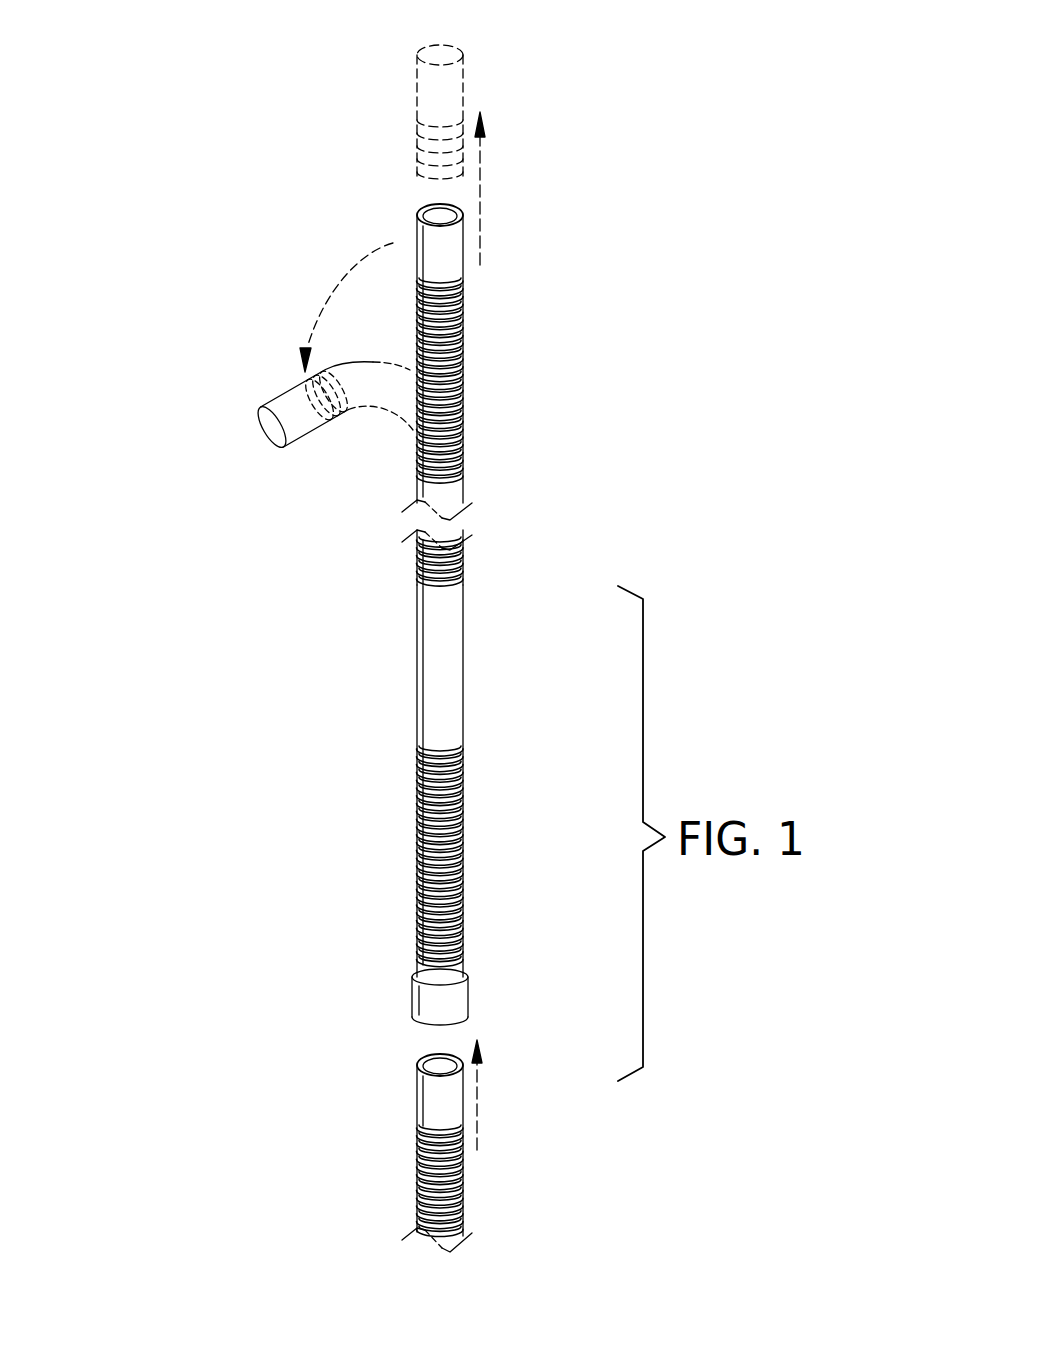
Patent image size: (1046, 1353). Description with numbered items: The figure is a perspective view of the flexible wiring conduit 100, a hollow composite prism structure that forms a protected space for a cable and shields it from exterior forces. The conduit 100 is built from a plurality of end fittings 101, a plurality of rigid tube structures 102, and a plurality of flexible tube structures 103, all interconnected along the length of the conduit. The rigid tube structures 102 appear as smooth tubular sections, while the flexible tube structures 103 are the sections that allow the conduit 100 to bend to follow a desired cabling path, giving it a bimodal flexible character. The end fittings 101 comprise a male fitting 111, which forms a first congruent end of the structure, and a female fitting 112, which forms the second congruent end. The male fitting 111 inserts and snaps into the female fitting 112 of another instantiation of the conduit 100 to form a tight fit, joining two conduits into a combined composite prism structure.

The flexible wiring conduit 100 is at (461, 626).
The end fittings 101 is at (168, 91).
The rigid tube structures 102 is at (457, 676).
The flexible tube structures 103 is at (463, 830).
The male fitting 111 is at (530, 1137).
The female fitting 112 is at (387, 991).